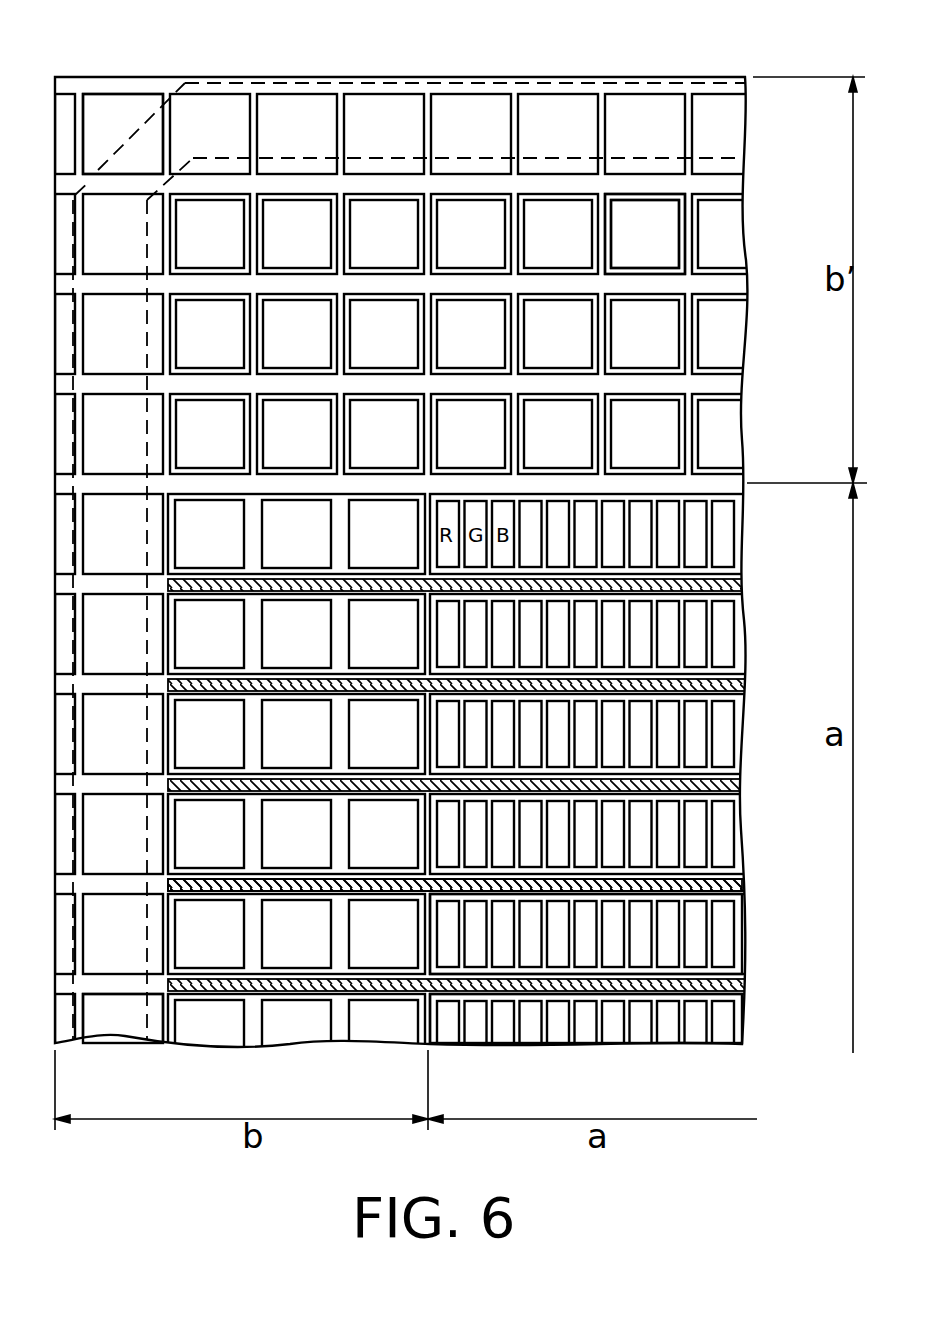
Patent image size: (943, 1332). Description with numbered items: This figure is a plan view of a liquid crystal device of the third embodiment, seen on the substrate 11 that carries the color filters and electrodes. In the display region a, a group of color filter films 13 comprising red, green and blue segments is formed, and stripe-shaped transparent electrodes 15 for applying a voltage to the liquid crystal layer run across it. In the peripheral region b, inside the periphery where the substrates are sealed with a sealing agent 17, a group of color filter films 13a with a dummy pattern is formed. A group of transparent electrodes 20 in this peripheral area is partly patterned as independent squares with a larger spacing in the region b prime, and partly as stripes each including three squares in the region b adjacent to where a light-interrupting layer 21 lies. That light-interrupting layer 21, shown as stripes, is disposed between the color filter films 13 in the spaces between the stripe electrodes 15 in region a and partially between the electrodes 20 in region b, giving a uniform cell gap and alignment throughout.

The substrate 11 is at (292, 1044).
The color filter films 13 is at (533, 1044).
The color filter films 13a is at (645, 218).
The transparent electrodes 15 is at (749, 900).
The sealing agent 17 is at (749, 85).
The transparent electrodes 20 is at (113, 93).
The light-interrupting layer 21 is at (735, 888).